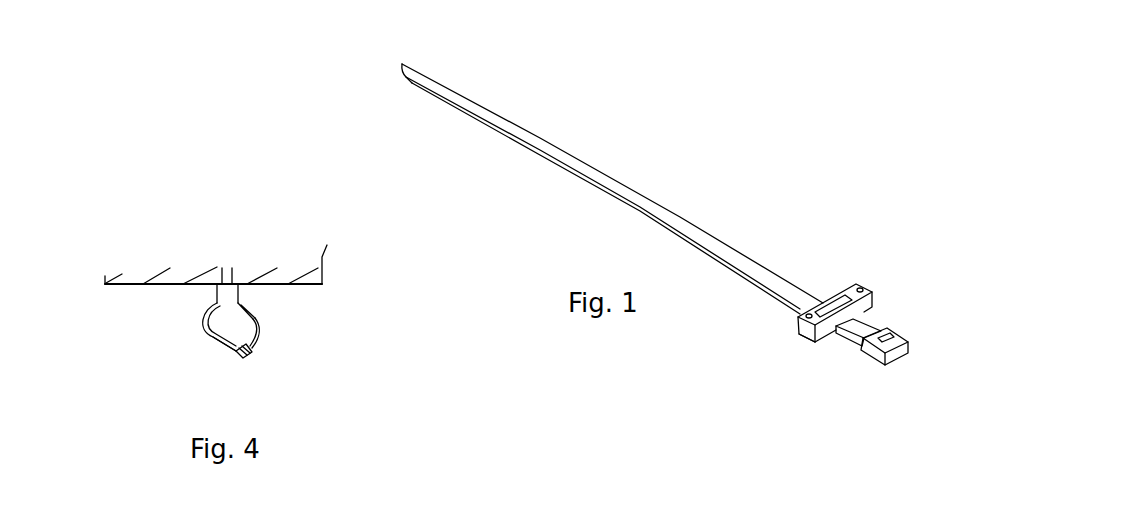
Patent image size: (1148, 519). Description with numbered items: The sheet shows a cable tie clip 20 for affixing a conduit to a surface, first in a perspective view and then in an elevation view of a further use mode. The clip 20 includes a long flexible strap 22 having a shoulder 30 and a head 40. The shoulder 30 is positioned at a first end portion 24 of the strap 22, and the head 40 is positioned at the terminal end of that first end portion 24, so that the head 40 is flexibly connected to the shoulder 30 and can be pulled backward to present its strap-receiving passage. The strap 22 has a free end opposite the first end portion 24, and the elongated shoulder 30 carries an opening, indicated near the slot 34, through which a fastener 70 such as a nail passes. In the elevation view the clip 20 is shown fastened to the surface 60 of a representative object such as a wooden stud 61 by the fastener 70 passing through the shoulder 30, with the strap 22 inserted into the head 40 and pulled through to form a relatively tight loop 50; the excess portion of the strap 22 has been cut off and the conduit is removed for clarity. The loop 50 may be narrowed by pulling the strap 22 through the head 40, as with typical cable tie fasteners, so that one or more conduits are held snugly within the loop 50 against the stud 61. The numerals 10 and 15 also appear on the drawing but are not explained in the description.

In FIG. 4, the stem 10 is at (243, 293).
In FIG. 4, the loop 15 is at (258, 332).
In FIG. 1, the cable tie clip 20 is at (780, 146).
In FIG. 4, the cable tie clip 20 is at (186, 319).
In FIG. 1, the strap 22 is at (601, 148).
In FIG. 4, the strap 22 is at (253, 352).
In FIG. 1, the first end portion 24 is at (795, 360).
In FIG. 1, the shoulder 30 is at (885, 284).
In FIG. 1, the slot 34 is at (858, 280).
In FIG. 1, the head 40 is at (910, 328).
In FIG. 4, the head 40 is at (238, 358).
In FIG. 4, the loop 50 is at (183, 357).
In FIG. 4, the surface 60 is at (117, 290).
In FIG. 4, the stud 61 is at (118, 267).
In FIG. 4, the fastener 70 is at (241, 275).